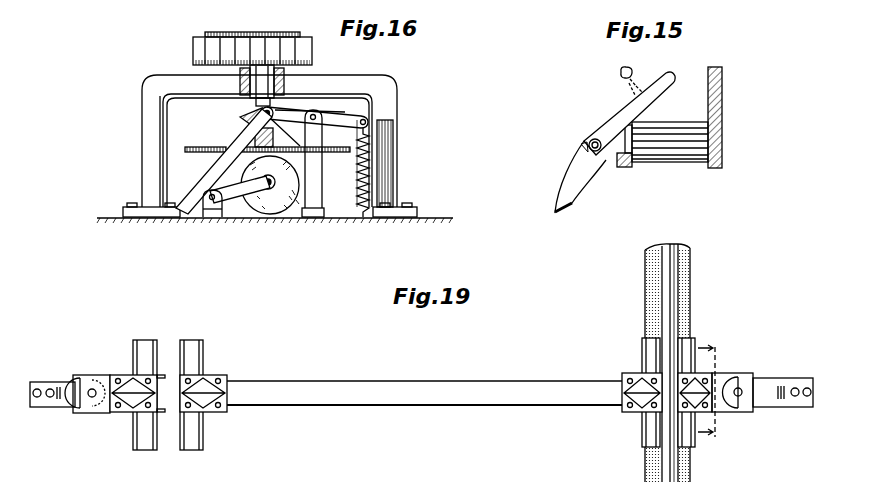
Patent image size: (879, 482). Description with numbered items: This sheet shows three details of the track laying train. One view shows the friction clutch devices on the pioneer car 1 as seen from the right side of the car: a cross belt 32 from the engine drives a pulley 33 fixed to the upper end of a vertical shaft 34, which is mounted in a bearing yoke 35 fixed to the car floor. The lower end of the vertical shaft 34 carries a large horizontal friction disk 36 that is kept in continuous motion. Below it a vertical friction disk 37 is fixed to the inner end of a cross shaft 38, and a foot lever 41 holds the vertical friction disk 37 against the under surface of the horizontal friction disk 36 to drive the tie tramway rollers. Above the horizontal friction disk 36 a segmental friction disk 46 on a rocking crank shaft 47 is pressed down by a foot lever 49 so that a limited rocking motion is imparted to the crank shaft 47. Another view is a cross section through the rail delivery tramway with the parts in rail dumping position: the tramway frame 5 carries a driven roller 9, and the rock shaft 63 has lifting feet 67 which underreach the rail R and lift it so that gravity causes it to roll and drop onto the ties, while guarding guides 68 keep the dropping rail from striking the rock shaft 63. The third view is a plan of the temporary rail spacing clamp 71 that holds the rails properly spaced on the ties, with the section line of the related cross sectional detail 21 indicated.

In FIG. 16, the pioneer car 1 is at (426, 218).
In FIG. 16, the cross belt 32 is at (195, 42).
In FIG. 16, the pulley 33 is at (237, 36).
In FIG. 16, the vertical shaft 34 is at (250, 110).
In FIG. 16, the bearing yoke 35 is at (340, 82).
In FIG. 16, the horizontal friction disk 36 is at (186, 152).
In FIG. 16, the vertical friction disk 37 is at (273, 190).
In FIG. 16, the shaft 38 is at (268, 196).
In FIG. 16, the foot lever 41 is at (205, 210).
In FIG. 16, the segmental friction disk 46 is at (262, 110).
In FIG. 16, the rocking crank shaft 47 is at (306, 128).
In FIG. 16, the foot lever 49 is at (216, 167).
In FIG. 15, the rail R is at (618, 72).
In FIG. 19, the rail R is at (680, 293).
In FIG. 15, the tramway frame 5 is at (722, 82).
In FIG. 15, the driven roller 9 is at (695, 155).
In FIG. 15, the rock shaft 63 is at (588, 150).
In FIG. 15, the lifting feet 67 is at (660, 101).
In FIG. 15, the guarding guides 68 is at (601, 172).
In FIG. 19, the temporary clamp 71 is at (272, 388).
In FIG. 19, the section line X-X of Fig. 21 is at (746, 451).